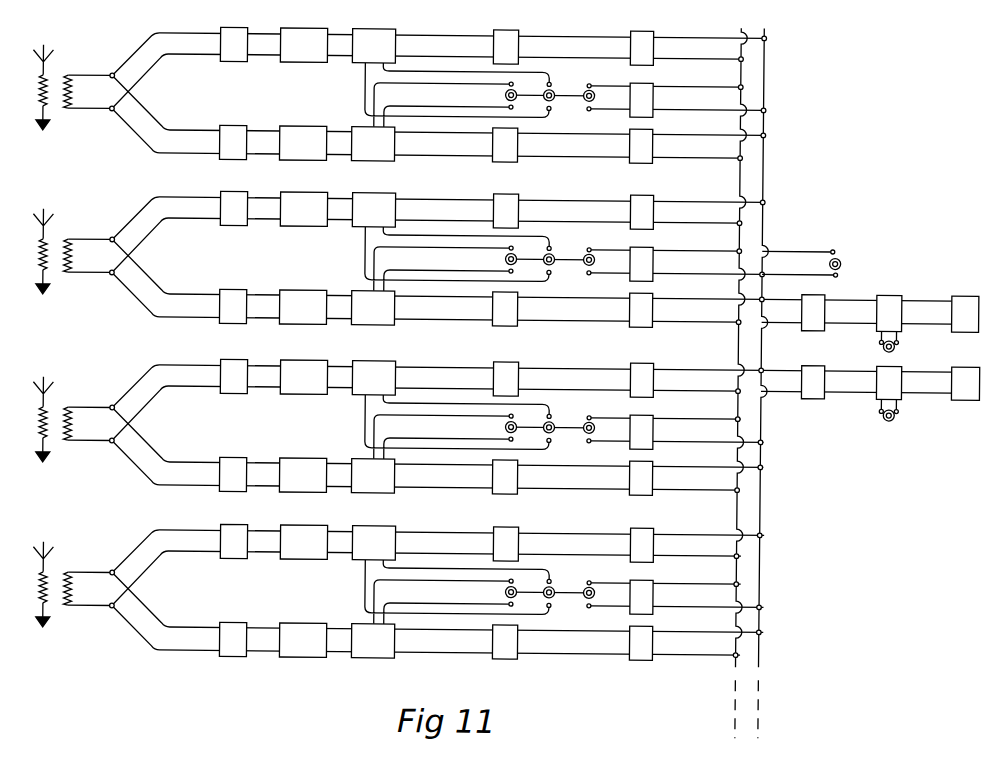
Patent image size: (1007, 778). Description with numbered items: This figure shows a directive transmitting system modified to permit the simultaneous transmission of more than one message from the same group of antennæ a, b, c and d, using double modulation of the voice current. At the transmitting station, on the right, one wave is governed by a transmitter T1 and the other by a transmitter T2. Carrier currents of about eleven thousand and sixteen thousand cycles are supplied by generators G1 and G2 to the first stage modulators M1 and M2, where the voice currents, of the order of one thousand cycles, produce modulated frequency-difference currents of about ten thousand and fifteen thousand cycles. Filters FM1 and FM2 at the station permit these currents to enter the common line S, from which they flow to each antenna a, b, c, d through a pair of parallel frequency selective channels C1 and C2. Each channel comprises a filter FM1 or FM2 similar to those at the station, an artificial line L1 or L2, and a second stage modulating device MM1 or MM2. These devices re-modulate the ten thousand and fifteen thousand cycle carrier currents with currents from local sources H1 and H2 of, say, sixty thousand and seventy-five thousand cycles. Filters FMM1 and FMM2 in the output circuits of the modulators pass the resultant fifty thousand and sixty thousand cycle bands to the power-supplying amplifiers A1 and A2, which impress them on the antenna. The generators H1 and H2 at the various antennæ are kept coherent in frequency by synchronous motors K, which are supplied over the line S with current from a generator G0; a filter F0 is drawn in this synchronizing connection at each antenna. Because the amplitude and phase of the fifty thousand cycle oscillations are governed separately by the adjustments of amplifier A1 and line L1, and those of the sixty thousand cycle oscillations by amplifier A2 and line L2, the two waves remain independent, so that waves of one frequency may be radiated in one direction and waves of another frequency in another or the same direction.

The antenna a is at (34, 87).
The antenna b is at (34, 251).
The antenna c is at (34, 419).
The antenna d is at (34, 584).
The power-supplying amplifier A1 is at (234, 292).
The power-supplying amplifier A2 is at (233, 390).
The filter FMM1 is at (304, 293).
The filter FMM2 is at (303, 391).
The second stage modulating device MM1 is at (374, 294).
The second stage modulating device MM2 is at (373, 392).
The artificial line L1 is at (506, 295).
The artificial line L2 is at (505, 393).
The filter FM1 is at (648, 64).
The filter FM2 is at (648, 162).
The filter of control circuit F0 is at (641, 348).
The frequency selective channel C1 is at (250, 57).
The frequency selective channel C2 is at (256, 141).
The source of radio frequency current H1 is at (548, 105).
The source of radio frequency current H2 is at (512, 91).
The synchronous motor K is at (592, 97).
The line S is at (763, 383).
The generator G0 is at (846, 262).
The carrier current generator G1 is at (898, 344).
The carrier current generator G2 is at (884, 418).
The first stage modulator M1 is at (889, 313).
The first stage modulator M2 is at (888, 382).
The transmitter T1 is at (965, 314).
The transmitter T2 is at (965, 383).